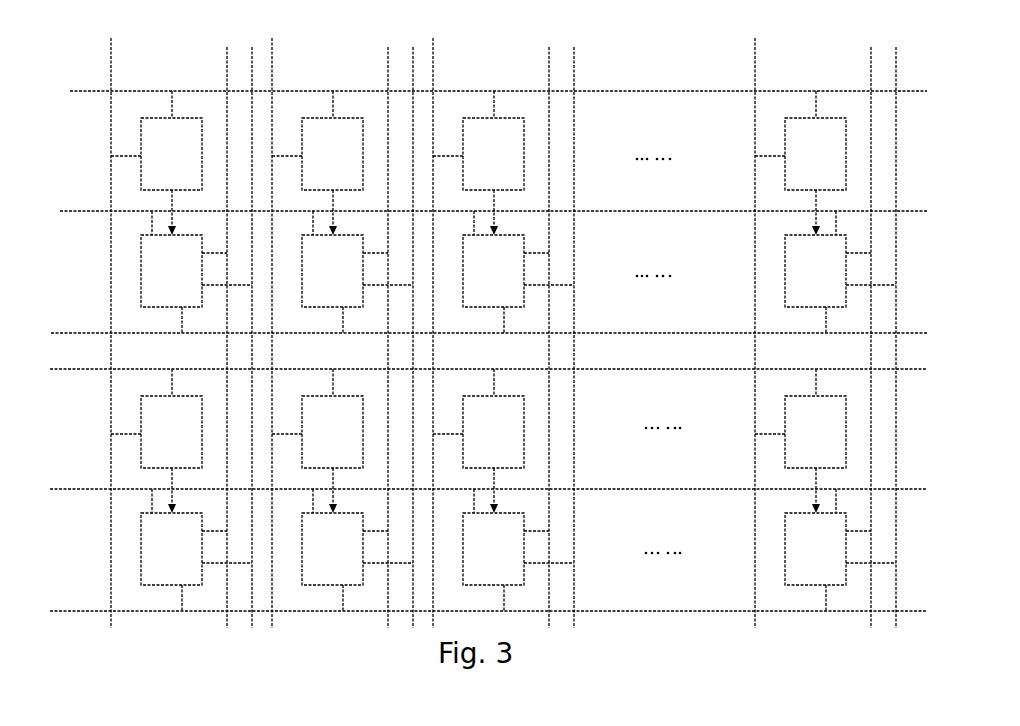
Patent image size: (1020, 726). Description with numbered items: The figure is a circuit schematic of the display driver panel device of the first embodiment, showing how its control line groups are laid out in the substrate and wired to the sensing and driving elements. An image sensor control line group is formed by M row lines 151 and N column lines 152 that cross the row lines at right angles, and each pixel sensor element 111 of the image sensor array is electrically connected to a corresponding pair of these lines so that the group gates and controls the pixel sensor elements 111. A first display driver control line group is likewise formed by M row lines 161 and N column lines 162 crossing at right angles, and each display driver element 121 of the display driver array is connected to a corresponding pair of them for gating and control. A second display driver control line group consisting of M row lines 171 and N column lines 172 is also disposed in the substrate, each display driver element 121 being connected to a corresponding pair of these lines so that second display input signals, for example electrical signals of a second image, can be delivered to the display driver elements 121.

The column lines of the image sensor control line group 152 is at (110, 59).
The row lines of the image sensor control line group 151 is at (89, 91).
The pixel sensor element 111 is at (152, 137).
The row lines of the first display driver control line group 161 is at (79, 211).
The display driver element 121 is at (147, 290).
The row lines of the second display driver control line group 171 is at (72, 333).
The column lines of the first display driver control line group 162 is at (227, 57).
The column lines of the second display driver control line group 172 is at (252, 57).